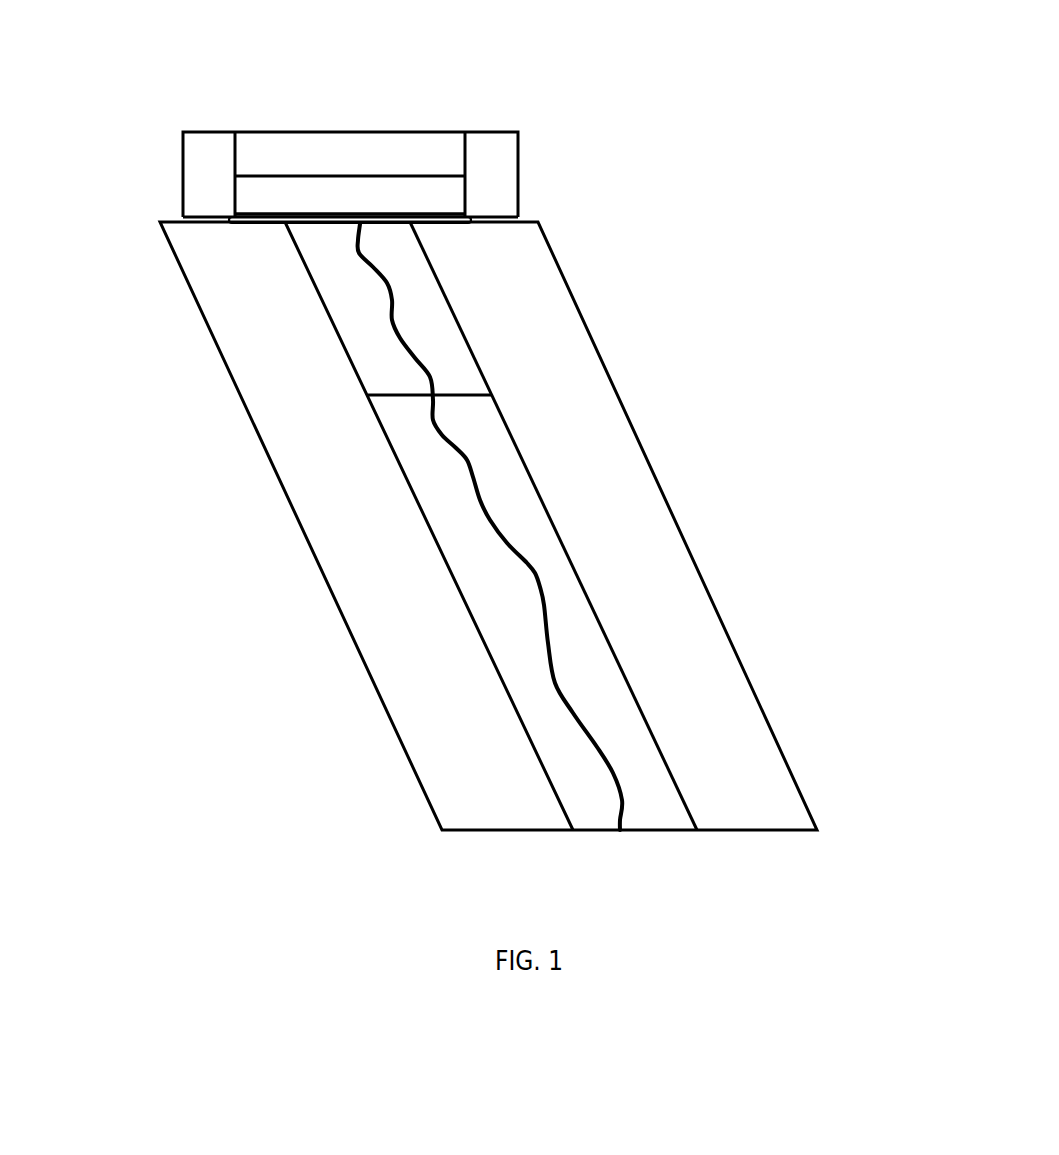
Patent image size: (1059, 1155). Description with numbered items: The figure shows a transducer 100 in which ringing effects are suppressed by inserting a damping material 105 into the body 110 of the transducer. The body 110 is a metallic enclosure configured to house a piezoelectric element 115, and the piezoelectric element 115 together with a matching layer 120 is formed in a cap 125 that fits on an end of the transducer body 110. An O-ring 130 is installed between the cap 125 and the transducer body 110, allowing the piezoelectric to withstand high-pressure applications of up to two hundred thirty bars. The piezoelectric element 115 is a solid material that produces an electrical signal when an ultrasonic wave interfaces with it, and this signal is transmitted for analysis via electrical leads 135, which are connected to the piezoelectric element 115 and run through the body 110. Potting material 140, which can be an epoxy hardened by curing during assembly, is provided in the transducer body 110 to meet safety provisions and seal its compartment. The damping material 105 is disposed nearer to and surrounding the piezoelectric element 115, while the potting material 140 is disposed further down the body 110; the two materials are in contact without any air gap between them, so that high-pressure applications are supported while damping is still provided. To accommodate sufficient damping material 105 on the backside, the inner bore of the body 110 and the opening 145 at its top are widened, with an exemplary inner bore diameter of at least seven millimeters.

The transducer 100 is at (667, 80).
The damping material 105 is at (437, 287).
The body 110 is at (617, 418).
The piezoelectric element 115 is at (424, 195).
The matching layer 120 is at (278, 146).
The cap 125 is at (181, 178).
The O-ring 130 is at (233, 221).
The electrical leads 135 is at (539, 573).
The potting material 140 is at (634, 718).
The opening 145 is at (497, 220).